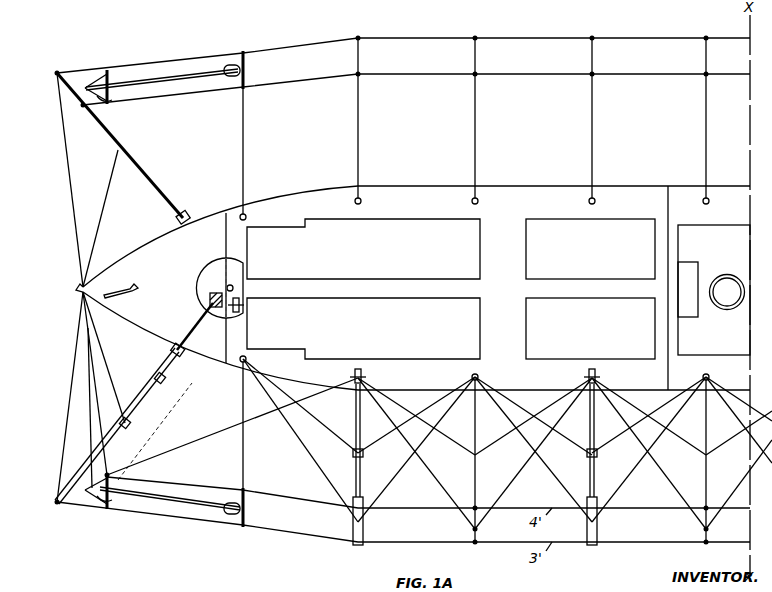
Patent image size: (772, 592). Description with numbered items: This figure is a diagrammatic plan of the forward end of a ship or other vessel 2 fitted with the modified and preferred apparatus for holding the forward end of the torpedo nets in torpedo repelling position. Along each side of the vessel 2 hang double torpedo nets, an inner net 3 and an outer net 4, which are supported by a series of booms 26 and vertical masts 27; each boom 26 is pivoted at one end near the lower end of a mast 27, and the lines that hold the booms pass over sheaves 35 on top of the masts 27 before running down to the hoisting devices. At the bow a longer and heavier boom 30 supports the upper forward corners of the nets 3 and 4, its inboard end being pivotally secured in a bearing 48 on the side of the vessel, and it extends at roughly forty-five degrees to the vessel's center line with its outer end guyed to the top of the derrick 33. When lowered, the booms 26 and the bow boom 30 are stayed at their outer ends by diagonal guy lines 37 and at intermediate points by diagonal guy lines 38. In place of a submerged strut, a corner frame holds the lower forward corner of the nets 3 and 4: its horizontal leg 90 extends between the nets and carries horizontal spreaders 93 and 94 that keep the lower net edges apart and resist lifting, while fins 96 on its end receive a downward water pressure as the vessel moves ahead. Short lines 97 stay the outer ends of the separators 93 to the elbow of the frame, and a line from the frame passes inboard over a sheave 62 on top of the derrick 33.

The ship or vessel 2 is at (451, 289).
The inner torpedo net 3 is at (546, 38).
The outer torpedo net 4 is at (536, 74).
The boom 26 is at (244, 163).
The vertical mast 27 is at (246, 216).
The bow boom 30 is at (147, 173).
The derrick 33 is at (237, 268).
The sheave 35 is at (366, 375).
The diagonal guy line 37 is at (313, 469).
The diagonal guy line 38 is at (318, 422).
The bearing 48 is at (186, 214).
The sheave 62 is at (210, 300).
The horizontal leg 90 is at (172, 70).
The horizontal spreader or separator 93 is at (114, 100).
The horizontal spreader or separator 94 is at (247, 78).
The fin or blade 96 is at (240, 57).
The short stay line 97 is at (102, 70).